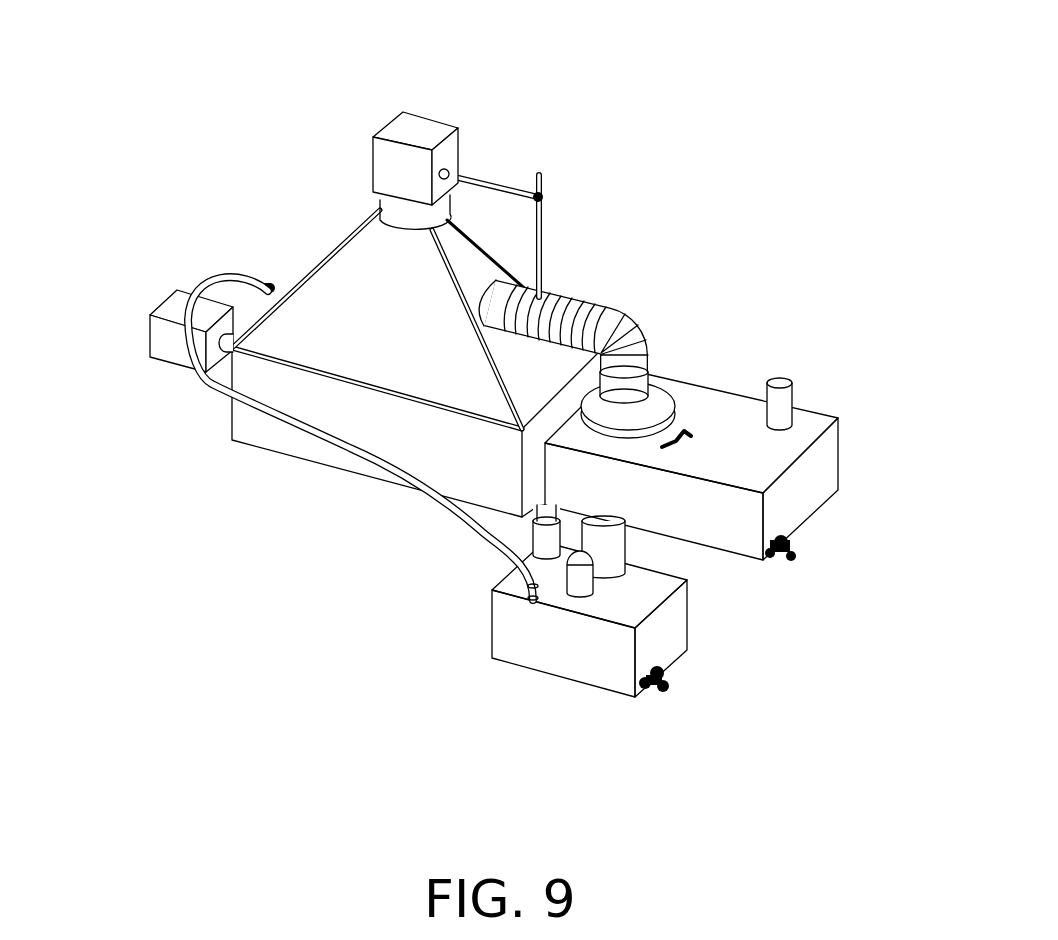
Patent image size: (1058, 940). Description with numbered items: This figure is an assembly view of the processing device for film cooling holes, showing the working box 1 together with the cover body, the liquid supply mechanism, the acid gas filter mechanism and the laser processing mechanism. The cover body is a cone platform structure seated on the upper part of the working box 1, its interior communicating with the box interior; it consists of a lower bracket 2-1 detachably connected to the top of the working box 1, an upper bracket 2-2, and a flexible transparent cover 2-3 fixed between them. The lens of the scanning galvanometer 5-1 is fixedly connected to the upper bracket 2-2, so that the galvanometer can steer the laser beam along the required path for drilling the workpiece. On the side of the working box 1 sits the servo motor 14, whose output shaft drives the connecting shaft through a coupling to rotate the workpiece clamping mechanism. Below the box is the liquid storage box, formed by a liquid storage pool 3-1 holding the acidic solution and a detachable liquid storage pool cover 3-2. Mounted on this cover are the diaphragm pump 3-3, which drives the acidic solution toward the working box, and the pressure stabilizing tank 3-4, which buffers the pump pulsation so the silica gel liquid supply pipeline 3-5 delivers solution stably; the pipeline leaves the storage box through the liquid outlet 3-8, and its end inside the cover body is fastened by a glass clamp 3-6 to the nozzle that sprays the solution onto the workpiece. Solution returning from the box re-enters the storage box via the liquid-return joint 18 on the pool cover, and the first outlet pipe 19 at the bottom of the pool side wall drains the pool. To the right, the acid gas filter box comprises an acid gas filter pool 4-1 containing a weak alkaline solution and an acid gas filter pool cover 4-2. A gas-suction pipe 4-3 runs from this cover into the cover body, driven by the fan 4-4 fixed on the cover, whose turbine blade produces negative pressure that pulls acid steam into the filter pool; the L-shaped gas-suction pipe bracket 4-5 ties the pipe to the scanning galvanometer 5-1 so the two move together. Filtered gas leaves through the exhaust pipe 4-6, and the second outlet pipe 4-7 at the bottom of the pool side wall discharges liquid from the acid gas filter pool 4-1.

The working box 1 is at (285, 442).
The lower bracket 2-1 is at (338, 325).
The upper bracket 2-2 is at (383, 222).
The flexible transparent cover 2-3 is at (292, 325).
The liquid storage pool 3-1 is at (640, 698).
The liquid storage pool cover 3-2 is at (635, 593).
The diaphragm pump 3-3 is at (612, 538).
The pressure stabilizing tank 3-4 is at (582, 578).
The liquid supply pipeline 3-5 is at (480, 533).
The glass clamp 3-6 is at (233, 277).
The liquid outlet 3-8 is at (527, 598).
The acid gas filter pool 4-1 is at (828, 467).
The acid gas filter pool cover 4-2 is at (785, 447).
The gas-suction pipe 4-3 is at (625, 332).
The fan 4-4 is at (647, 415).
The L-shaped gas-suction pipe bracket 4-5 is at (541, 245).
The exhaust pipe 4-6 is at (781, 400).
The second outlet pipe 4-7 is at (797, 553).
The scanning galvanometer 5-1 is at (423, 135).
The servo motor 14 is at (150, 357).
The liquid-return joint 18 is at (548, 542).
The first outlet pipe 19 is at (672, 688).